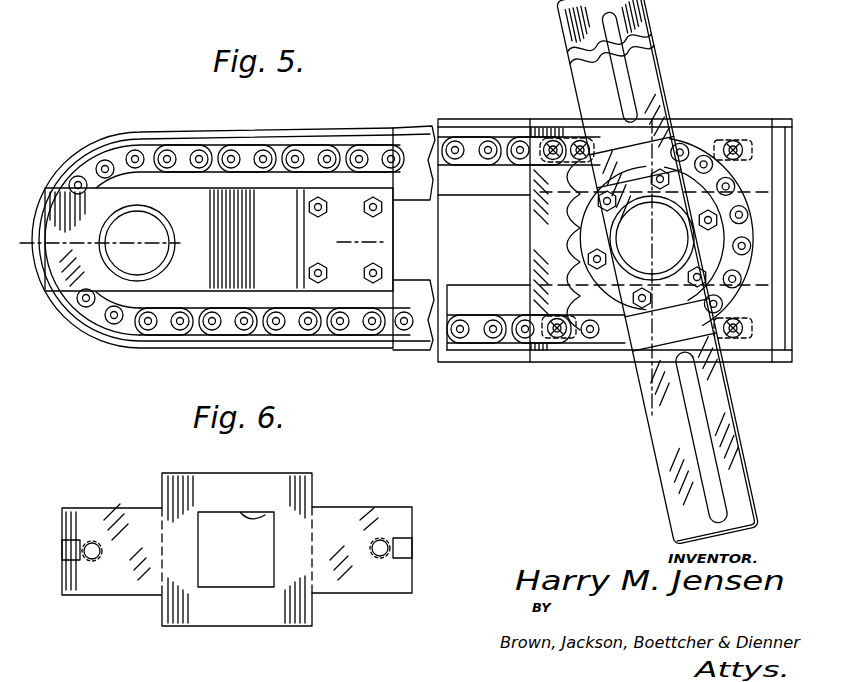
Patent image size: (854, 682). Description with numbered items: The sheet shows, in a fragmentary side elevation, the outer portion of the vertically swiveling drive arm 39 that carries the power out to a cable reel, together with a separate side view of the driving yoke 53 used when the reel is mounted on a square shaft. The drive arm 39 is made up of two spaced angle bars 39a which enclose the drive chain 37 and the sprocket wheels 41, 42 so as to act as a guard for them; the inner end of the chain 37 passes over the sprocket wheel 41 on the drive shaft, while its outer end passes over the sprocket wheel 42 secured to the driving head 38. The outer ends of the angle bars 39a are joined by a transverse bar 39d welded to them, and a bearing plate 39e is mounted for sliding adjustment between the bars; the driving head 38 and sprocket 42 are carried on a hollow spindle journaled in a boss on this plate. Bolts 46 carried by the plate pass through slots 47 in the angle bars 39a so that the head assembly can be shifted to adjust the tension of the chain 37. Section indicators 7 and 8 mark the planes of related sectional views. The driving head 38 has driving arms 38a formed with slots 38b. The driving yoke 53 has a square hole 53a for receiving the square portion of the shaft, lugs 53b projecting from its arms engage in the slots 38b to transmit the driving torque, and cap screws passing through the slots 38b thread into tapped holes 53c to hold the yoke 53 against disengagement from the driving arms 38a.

In FIG. 5, the section line 7- 7 is at (678, 70).
In FIG. 5, the section line 8- 8 is at (25, 228).
In FIG. 5, the drive chain 37 is at (305, 148).
In FIG. 5, the driving head 38 is at (700, 132).
In FIG. 5, the driving arms 38a is at (580, 34).
In FIG. 5, the slots 38b is at (613, 33).
In FIG. 5, the drive arm 39 is at (440, 122).
In FIG. 5, the angle bars 39a is at (465, 178).
In FIG. 5, the transverse bar 39d is at (787, 367).
In FIG. 5, the bearing plate 39e is at (521, 133).
In FIG. 5, the sprocket wheel 41 is at (135, 300).
In FIG. 5, the sprocket wheel 42 is at (548, 236).
In FIG. 5, the bolts 46 is at (563, 132).
In FIG. 5, the slots 47 is at (762, 130).
In FIG. 6, the driving yoke 53 is at (146, 494).
In FIG. 6, the square hole 53a is at (267, 517).
In FIG. 6, the lugs 53b is at (66, 546).
In FIG. 6, the tapped holes 53c is at (92, 560).